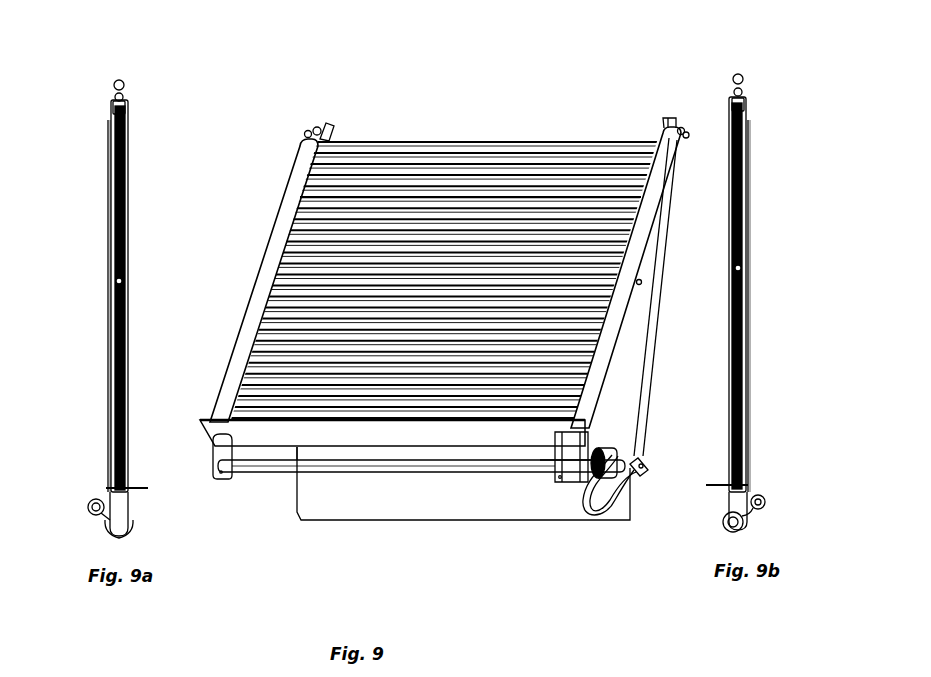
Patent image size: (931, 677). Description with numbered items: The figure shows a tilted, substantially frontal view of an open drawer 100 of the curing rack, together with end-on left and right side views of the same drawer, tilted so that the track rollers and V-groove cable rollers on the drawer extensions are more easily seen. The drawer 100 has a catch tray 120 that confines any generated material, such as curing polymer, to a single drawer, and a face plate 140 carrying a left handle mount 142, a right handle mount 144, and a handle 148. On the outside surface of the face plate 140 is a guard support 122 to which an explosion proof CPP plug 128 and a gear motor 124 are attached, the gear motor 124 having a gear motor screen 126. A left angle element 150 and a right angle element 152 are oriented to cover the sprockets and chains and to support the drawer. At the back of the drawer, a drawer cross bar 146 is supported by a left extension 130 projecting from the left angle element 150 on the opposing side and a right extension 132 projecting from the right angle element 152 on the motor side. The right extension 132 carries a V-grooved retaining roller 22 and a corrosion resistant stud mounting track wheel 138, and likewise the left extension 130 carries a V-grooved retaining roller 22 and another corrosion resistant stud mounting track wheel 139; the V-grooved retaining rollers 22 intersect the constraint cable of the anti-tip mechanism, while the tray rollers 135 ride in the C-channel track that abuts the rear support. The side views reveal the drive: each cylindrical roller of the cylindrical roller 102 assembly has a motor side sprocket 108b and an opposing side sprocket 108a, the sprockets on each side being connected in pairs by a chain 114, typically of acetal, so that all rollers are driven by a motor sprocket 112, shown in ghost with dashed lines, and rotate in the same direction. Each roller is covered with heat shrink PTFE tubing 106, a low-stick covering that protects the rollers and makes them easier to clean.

In FIG. 9, the drawer 100 is at (466, 80).
In FIG. 9A, the drawer 100 is at (68, 175).
In FIG. 9B, the drawer 100 is at (843, 170).
In FIG. 9, the cylindrical roller 102 is at (436, 331).
In FIG. 9, the heat shrink PTFE tubing 106 is at (298, 260).
In FIG. 9A, the opposing side sprocket 108a is at (112, 238).
In FIG. 9B, the motor side sprocket 108b is at (746, 308).
In FIG. 9B, the motor sprocket 112 is at (748, 495).
In FIG. 9A, the chain 114 is at (109, 303).
In FIG. 9B, the chain 114 is at (732, 482).
In FIG. 9, the catch tray 120 is at (367, 495).
In FIG. 9, the guard support 122 is at (566, 476).
In FIG. 9, the gear motor 124 is at (600, 453).
In FIG. 9, the gear motor screen 126 is at (619, 462).
In FIG. 9, the explosion proof CPP plug 128 is at (637, 478).
In FIG. 9, the left extension 130 is at (332, 126).
In FIG. 9A, the left extension 130 is at (128, 110).
In FIG. 9, the right extension 132 is at (664, 122).
In FIG. 9B, the right extension 132 is at (744, 93).
In FIG. 9, the tray roller 135 is at (641, 284).
In FIG. 9A, the tray roller 135 is at (126, 281).
In FIG. 9B, the tray roller 135 is at (748, 270).
In FIG. 9, the stud mounting track wheel 138 is at (688, 138).
In FIG. 9B, the stud mounting track wheel 138 is at (745, 104).
In FIG. 9, the stud mounting track wheel 139 is at (305, 133).
In FIG. 9A, the stud mounting track wheel 139 is at (116, 97).
In FIG. 9, the face plate 140 is at (290, 430).
In FIG. 9, the left handle mount 142 is at (211, 455).
In FIG. 9, the right handle mount 144 is at (590, 452).
In FIG. 9, the drawer cross bar 146 is at (458, 141).
In FIG. 9, the handle 148 is at (325, 460).
In FIG. 9, the left angle element 150 is at (280, 232).
In FIG. 9, the right angle element 152 is at (657, 188).
In FIG. 9, the V-grooved retaining roller 22 is at (316, 127).
In FIG. 9A, the V-grooved retaining roller 22 is at (114, 81).
In FIG. 9B, the V-grooved retaining roller 22 is at (744, 77).